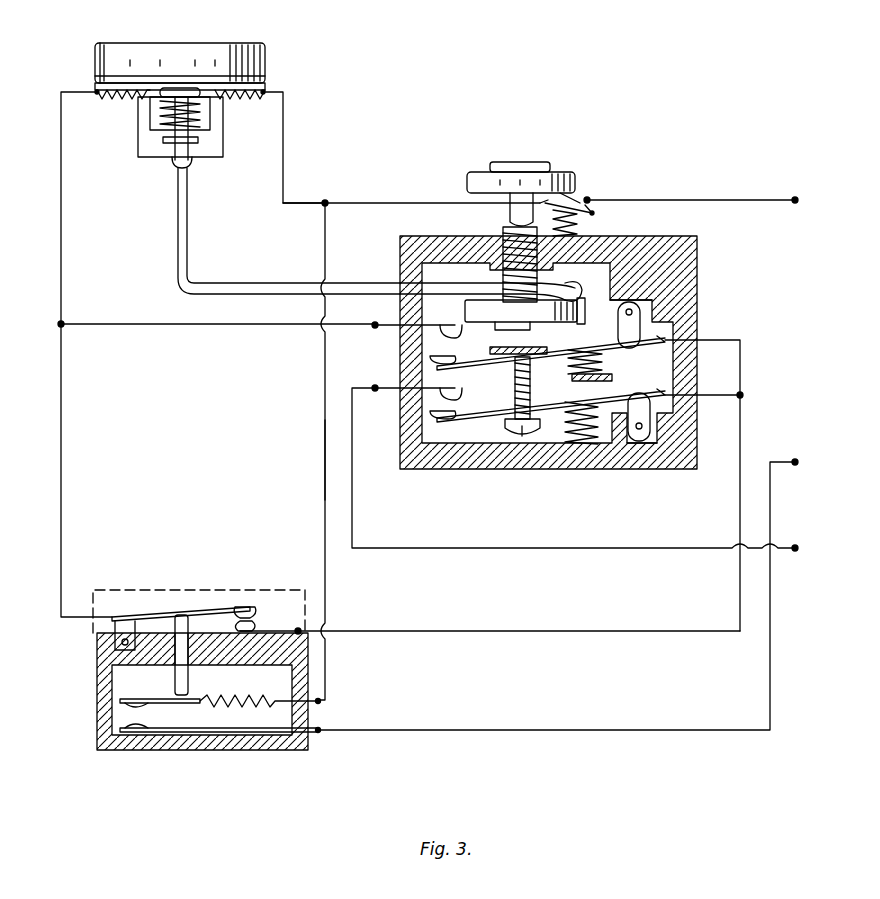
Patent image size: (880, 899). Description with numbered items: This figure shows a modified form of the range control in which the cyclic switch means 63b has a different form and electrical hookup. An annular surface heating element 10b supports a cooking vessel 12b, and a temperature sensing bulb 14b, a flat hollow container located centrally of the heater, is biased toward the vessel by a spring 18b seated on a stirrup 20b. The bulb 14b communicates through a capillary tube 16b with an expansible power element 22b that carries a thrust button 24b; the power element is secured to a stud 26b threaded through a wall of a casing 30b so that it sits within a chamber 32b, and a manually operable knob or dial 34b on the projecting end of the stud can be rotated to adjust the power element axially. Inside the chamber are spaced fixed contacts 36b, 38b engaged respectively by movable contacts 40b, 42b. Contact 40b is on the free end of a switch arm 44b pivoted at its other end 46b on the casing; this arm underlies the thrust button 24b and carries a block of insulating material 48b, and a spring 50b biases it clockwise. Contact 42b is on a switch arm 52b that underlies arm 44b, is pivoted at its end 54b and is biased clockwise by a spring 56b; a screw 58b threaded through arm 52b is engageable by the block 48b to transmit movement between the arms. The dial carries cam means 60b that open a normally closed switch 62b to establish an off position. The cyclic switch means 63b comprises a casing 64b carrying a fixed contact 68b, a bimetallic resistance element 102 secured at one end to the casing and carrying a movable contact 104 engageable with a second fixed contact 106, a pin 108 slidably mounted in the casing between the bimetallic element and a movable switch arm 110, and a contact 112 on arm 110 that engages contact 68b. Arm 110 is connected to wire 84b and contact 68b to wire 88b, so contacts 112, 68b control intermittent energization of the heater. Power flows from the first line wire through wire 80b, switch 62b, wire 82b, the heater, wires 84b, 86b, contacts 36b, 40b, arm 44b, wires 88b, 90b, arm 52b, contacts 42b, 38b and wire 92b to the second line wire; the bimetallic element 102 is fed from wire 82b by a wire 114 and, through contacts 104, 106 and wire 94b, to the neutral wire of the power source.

The surface heating element 10b is at (250, 97).
The cooking vessel 12b is at (215, 28).
The temperature sensing bulb 14b is at (182, 90).
The capillary tube 16b is at (232, 283).
The spring 18b is at (160, 110).
The stirrup 20b is at (172, 140).
The expansible power element 22b is at (582, 290).
The thrust button 24b is at (530, 327).
The stud 26b is at (503, 235).
The casing 30b is at (697, 275).
The chamber 32b is at (575, 380).
The manually operable knob or dial 34b is at (510, 165).
The fixed contact 36b is at (455, 325).
The fixed contact 38b is at (440, 412).
The movable contact 40b is at (432, 356).
The movable contact 42b is at (445, 402).
The switch arm 44b is at (475, 378).
The pivoted end of switch arm 46b is at (645, 308).
The block of insulating material 48b is at (498, 347).
The spring 50b is at (631, 334).
The switch arm 52b is at (612, 402).
The pivoted end of switch arm 54b is at (640, 443).
The spring 56b is at (560, 444).
The screw 58b is at (515, 395).
The cam means 60b is at (565, 210).
The normally closed switch 62b is at (580, 203).
The cyclic switch means 63b is at (162, 580).
The casing 64b is at (97, 660).
The fixed contact 68b is at (255, 628).
The wire 80b is at (690, 200).
The wire 82b is at (283, 155).
The wire 84b is at (61, 218).
The wire 86b is at (100, 324).
The wire 88b is at (520, 631).
The wire 90b is at (735, 398).
The wire 92b is at (612, 548).
The wire 94b is at (602, 730).
The bimetallic resistance element 102 is at (235, 694).
The movable contact 104 is at (120, 701).
The fixed contact 106 is at (120, 730).
The pin 108 is at (175, 690).
The movable switch arm 110 is at (145, 610).
The contact 112 is at (240, 607).
The wire 114 is at (325, 461).